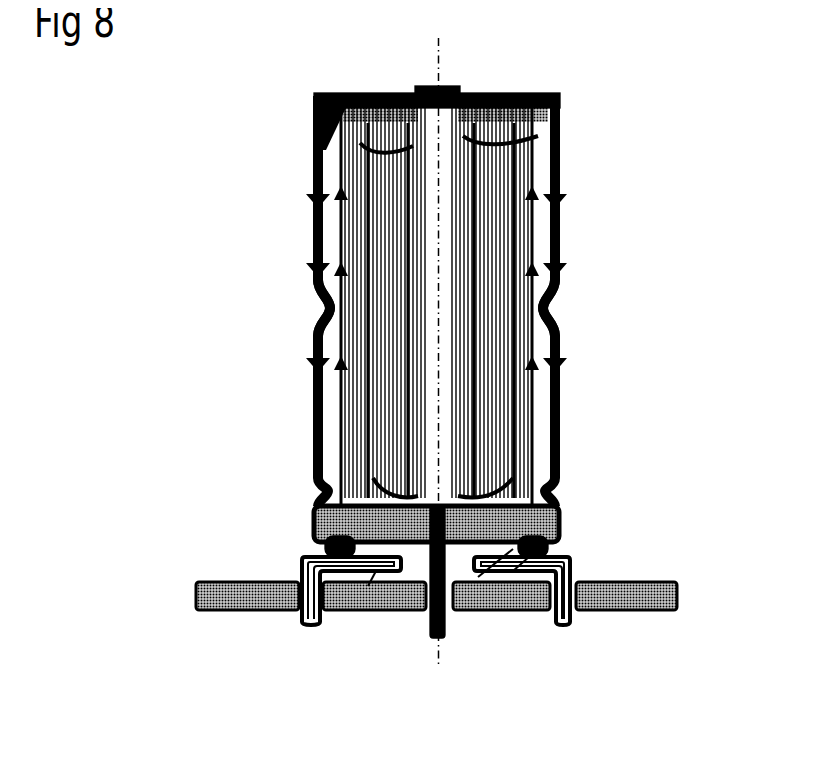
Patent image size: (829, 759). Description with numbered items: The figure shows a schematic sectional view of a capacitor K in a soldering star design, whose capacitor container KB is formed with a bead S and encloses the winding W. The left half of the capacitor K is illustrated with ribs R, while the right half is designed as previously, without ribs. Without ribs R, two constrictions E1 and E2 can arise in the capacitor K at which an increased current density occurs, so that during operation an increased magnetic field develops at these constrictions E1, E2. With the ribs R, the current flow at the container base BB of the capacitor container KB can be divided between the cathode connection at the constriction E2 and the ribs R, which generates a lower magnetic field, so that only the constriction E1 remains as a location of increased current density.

The capacitor K is at (570, 182).
The capacitor container KB is at (555, 128).
The container base BB is at (375, 88).
The constriction E2 is at (438, 78).
The constriction E1 is at (418, 597).
The ribs R is at (307, 117).
The winding W is at (353, 240).
The bead S is at (318, 303).